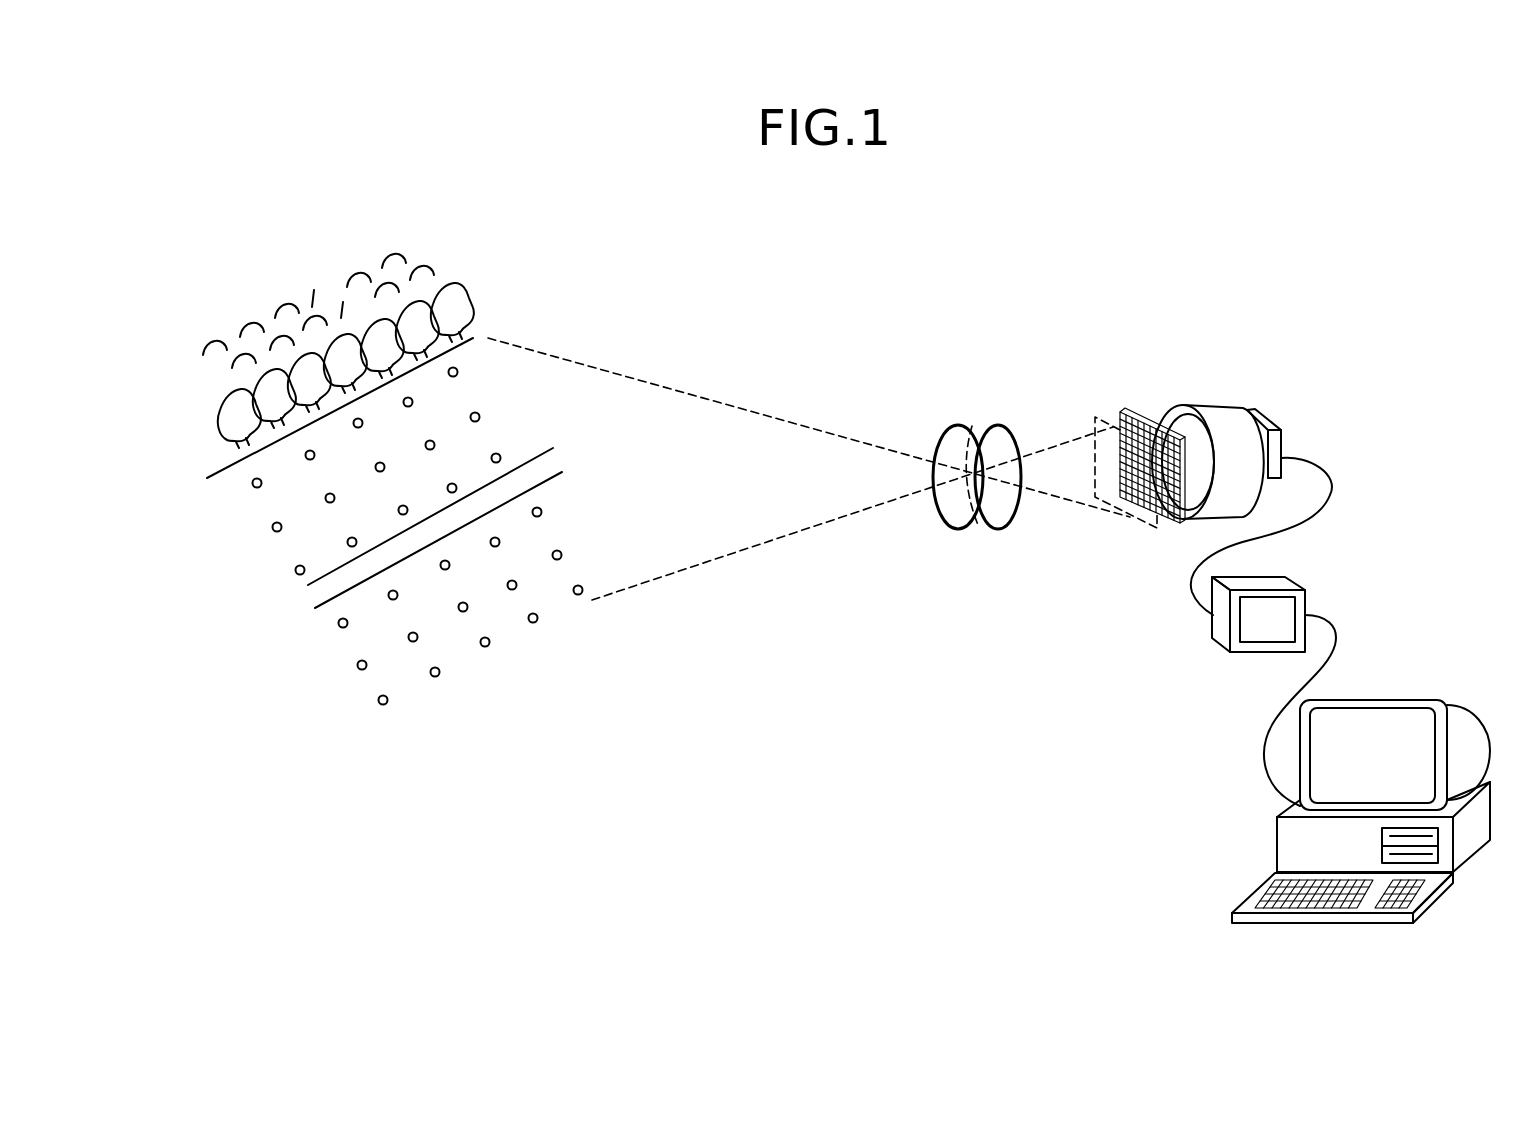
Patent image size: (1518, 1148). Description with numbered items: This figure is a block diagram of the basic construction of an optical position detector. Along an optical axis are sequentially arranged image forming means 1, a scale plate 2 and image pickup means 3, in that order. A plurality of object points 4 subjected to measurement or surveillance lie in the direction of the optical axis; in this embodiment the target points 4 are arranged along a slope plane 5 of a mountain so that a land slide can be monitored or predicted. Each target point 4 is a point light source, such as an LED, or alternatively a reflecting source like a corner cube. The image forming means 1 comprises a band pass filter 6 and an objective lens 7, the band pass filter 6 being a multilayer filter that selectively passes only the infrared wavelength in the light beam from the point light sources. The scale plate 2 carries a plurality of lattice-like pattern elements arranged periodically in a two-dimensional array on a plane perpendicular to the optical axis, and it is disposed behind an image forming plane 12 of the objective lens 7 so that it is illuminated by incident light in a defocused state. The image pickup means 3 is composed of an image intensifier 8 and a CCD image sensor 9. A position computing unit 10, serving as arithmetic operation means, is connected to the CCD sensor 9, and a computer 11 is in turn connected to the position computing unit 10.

The image forming means 1 is at (905, 404).
The scale plate 2 is at (1128, 415).
The image pickup means 3 is at (1112, 446).
The object points 4 is at (272, 532).
The slope plane 5 is at (580, 365).
The band pass filter 6 is at (938, 512).
The objective lens 7 is at (992, 430).
The image intensifier 8 is at (1215, 407).
The CCD image sensor 9 is at (1270, 418).
The position computing unit 10 is at (1287, 575).
The computer 11 is at (1308, 758).
The image forming plane 12 is at (1127, 527).